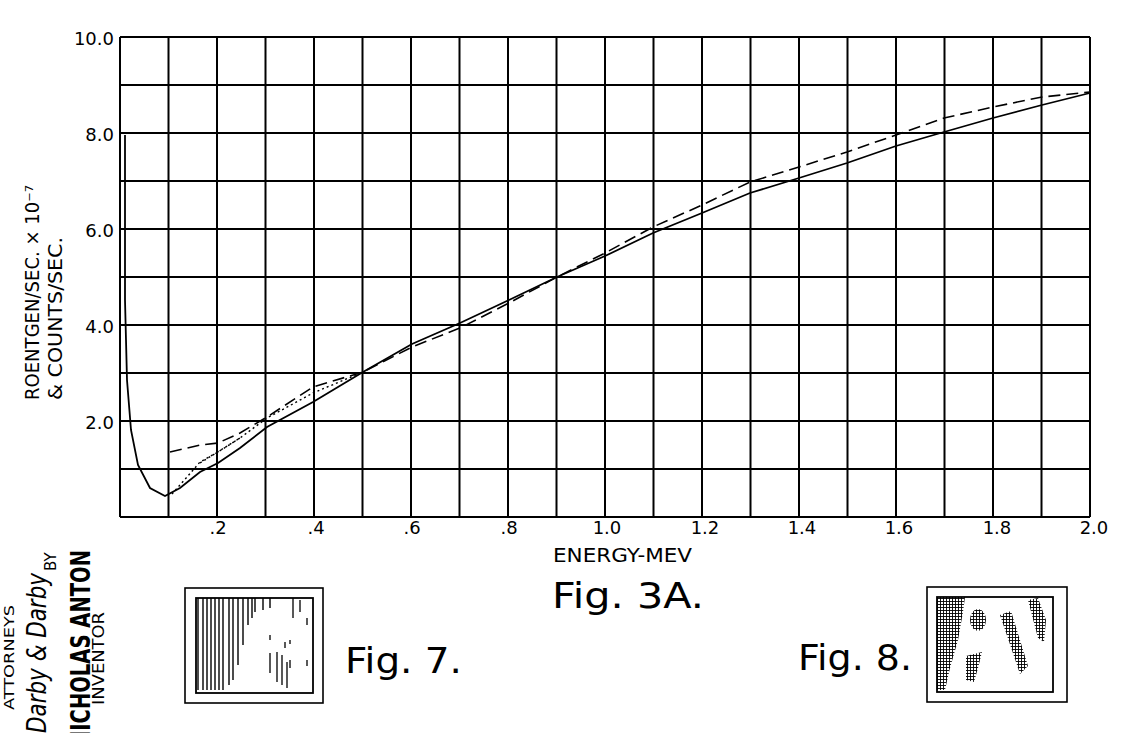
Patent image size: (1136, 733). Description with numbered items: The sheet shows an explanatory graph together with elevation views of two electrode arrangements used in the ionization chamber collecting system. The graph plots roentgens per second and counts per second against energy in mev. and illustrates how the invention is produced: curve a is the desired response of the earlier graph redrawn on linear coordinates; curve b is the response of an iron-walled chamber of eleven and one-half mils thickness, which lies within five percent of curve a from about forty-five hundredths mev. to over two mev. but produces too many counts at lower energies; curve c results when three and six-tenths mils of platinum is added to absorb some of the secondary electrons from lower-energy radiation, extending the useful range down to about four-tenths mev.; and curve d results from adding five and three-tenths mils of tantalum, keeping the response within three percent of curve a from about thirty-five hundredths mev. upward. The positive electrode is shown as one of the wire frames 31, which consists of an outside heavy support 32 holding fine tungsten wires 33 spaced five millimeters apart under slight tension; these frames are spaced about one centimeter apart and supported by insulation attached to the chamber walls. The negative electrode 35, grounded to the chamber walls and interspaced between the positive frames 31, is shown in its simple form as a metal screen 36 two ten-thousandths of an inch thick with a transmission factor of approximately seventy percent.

In FIG. 3A, the curve a is at (866, 162).
In FIG. 3A, the curve b is at (866, 143).
In FIG. 3A, the curve c is at (203, 455).
In FIG. 3A, the curve d is at (228, 448).
In FIG. 7, the wire frame 31 is at (324, 623).
In FIG. 7, the outside heavy support 32 is at (308, 704).
In FIG. 7, the tungsten wires 33 is at (205, 627).
In FIG. 8, the negative electrode 35 is at (1073, 625).
In FIG. 8, the metal screen 36 is at (955, 602).